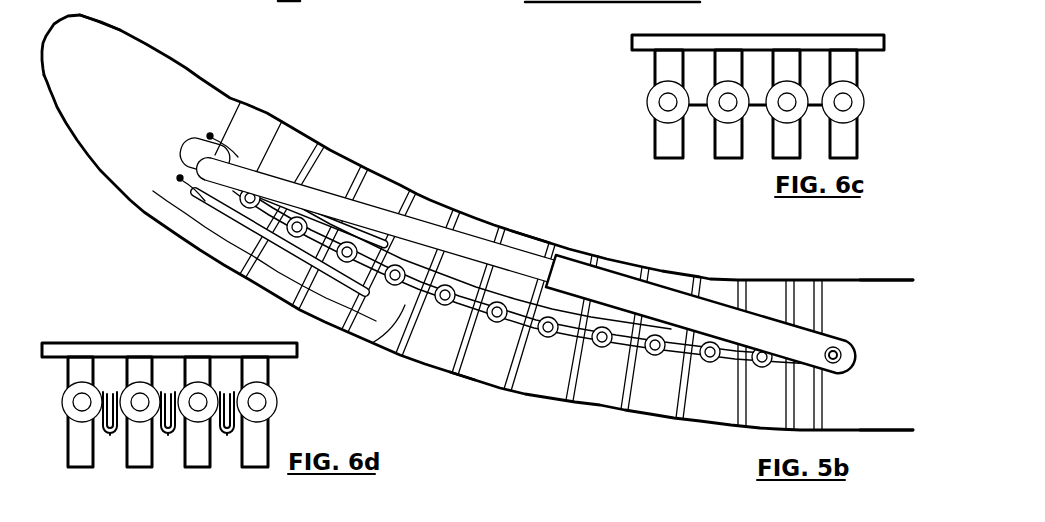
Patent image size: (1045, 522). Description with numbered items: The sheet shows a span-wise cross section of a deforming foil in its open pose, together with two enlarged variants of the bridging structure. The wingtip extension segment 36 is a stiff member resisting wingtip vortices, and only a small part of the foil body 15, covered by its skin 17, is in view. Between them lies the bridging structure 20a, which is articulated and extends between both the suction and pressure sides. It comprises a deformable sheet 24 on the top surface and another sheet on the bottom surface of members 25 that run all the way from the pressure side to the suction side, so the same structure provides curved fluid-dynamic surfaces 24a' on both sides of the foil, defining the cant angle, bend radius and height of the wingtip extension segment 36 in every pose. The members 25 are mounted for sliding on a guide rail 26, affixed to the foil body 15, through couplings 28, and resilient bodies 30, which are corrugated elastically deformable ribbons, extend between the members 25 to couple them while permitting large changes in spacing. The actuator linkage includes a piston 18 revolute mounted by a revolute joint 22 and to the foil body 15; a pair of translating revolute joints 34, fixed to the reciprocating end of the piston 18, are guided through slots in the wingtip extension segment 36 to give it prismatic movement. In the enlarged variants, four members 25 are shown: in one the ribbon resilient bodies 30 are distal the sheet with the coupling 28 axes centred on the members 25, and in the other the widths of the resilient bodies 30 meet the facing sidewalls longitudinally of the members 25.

In FIG. 5B, the foil body 15 is at (902, 382).
In FIG. 5B, the skin 17 is at (897, 429).
In FIG. 5B, the piston 18 is at (781, 348).
In FIG. 5B, the bridging structure 20a is at (716, 228).
In FIG. 5B, the revolute joint 22 is at (838, 348).
In FIG. 5B, the deformable sheet 24 is at (571, 246).
In FIG. 6C, the deformable sheet 24 is at (858, 43).
In FIG. 6D, the deformable sheet 24 is at (53, 343).
In FIG. 5B, the fluid-dynamic surfaces 24a' is at (500, 308).
In FIG. 5B, the members 25 is at (767, 297).
In FIG. 6C, the members 25 is at (830, 70).
In FIG. 6D, the members 25 is at (135, 452).
In FIG. 5B, the guide rail 26 is at (372, 343).
In FIG. 6D, the guide rail 26 is at (168, 391).
In FIG. 5B, the couplings 28 is at (545, 329).
In FIG. 6C, the couplings 28 is at (785, 108).
In FIG. 6D, the couplings 28 is at (169, 402).
In FIG. 5B, the resilient bodies 30 is at (685, 349).
In FIG. 6C, the resilient bodies 30 is at (714, 149).
In FIG. 6D, the resilient bodies 30 is at (226, 434).
In FIG. 5B, the translating revolute joints 34 is at (231, 132).
In FIG. 5B, the wingtip extension segment 36 is at (143, 158).